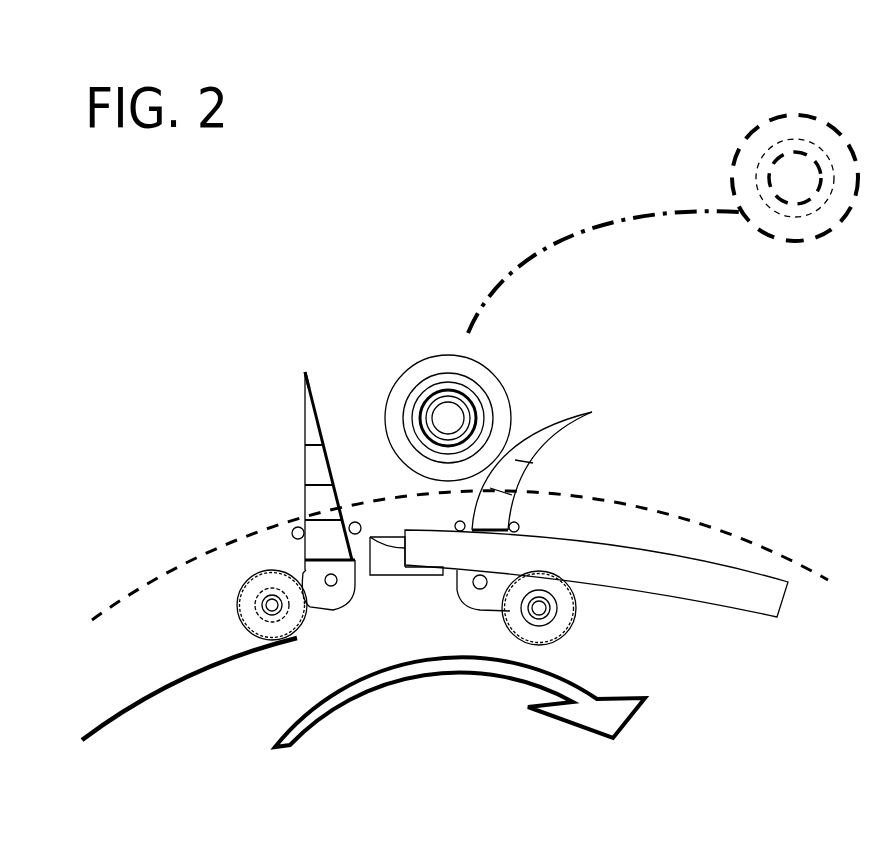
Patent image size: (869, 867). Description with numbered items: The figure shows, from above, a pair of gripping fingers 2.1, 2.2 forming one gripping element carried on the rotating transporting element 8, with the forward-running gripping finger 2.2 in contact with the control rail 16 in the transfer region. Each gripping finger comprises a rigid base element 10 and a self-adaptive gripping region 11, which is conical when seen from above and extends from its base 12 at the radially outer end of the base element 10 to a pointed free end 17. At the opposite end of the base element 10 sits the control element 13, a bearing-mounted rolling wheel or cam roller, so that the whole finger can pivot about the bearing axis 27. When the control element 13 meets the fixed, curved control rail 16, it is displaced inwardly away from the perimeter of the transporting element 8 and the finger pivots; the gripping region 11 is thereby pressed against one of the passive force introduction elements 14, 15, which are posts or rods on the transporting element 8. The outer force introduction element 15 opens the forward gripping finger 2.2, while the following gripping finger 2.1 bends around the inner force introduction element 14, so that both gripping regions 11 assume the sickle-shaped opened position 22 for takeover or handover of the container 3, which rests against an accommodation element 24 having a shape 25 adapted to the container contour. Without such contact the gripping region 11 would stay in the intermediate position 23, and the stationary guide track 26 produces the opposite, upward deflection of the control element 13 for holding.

The gripping finger 2.1 is at (546, 472).
The gripping finger 2.2 is at (277, 447).
The container 3 is at (526, 391).
The transporting element 8 is at (414, 725).
The base element 10 is at (320, 598).
The self-adaptive gripping region 11 is at (305, 481).
The base 12 is at (314, 557).
The control element 13 is at (252, 622).
The force introduction element 14 is at (358, 508).
The force introduction element 15 is at (270, 520).
The control rail 16 is at (640, 563).
The free end 17 is at (305, 372).
The opened position 22 is at (559, 463).
The intermediate position 23 is at (277, 407).
The accommodation element 24 is at (395, 577).
The shape 25 is at (406, 544).
The guide track 26 is at (143, 715).
The bearing axis 27 is at (547, 613).